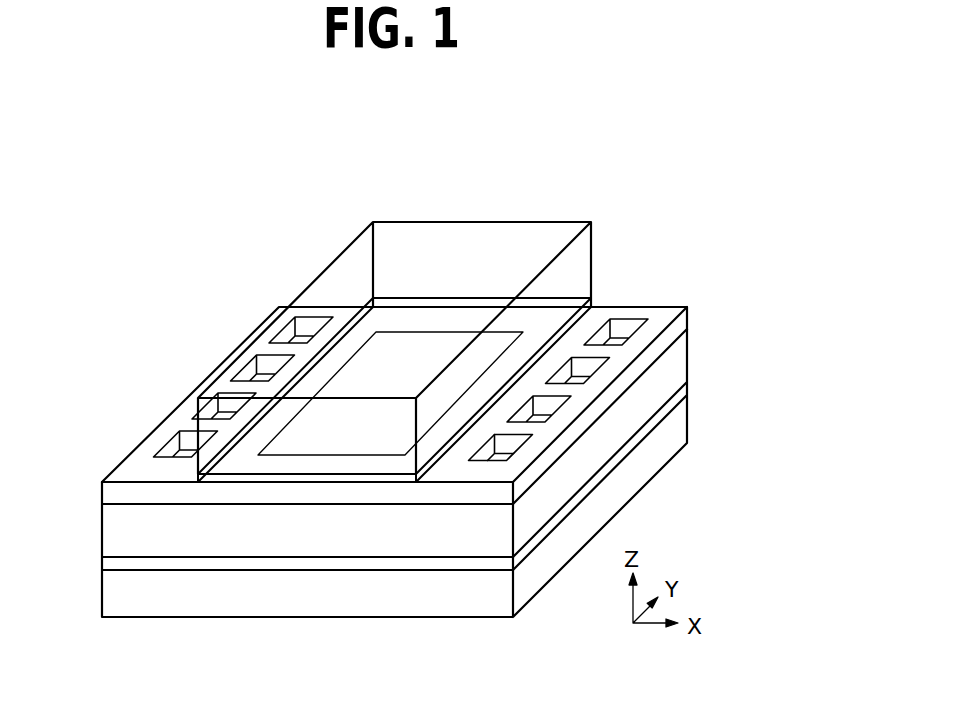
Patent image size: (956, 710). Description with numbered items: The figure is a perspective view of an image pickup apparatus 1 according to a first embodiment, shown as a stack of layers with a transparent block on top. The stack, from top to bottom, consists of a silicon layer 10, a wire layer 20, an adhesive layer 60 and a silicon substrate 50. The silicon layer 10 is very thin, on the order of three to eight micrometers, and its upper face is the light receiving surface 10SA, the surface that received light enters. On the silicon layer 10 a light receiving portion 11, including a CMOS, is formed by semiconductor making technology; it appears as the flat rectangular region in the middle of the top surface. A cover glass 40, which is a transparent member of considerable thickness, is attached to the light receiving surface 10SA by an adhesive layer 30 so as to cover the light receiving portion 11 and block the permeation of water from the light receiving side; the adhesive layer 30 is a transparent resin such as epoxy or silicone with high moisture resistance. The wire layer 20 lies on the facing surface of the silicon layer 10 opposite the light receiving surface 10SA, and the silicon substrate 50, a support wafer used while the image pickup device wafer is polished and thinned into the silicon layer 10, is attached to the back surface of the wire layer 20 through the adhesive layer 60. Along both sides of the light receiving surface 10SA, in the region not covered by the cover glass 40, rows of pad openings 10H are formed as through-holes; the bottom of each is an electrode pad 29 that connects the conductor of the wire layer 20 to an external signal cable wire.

The image pickup apparatus 1 is at (188, 234).
The silicon layer 10 is at (102, 494).
The pad openings 10H is at (620, 324).
The light receiving surface 10SA is at (457, 462).
The light receiving portion 11 is at (405, 330).
The wire layer 20 is at (102, 530).
The electrode pad 29 is at (502, 455).
The adhesive layer 30 is at (198, 477).
The cover glass 40 is at (199, 412).
The silicon substrate 50 is at (102, 597).
The adhesive layer 60 is at (102, 565).